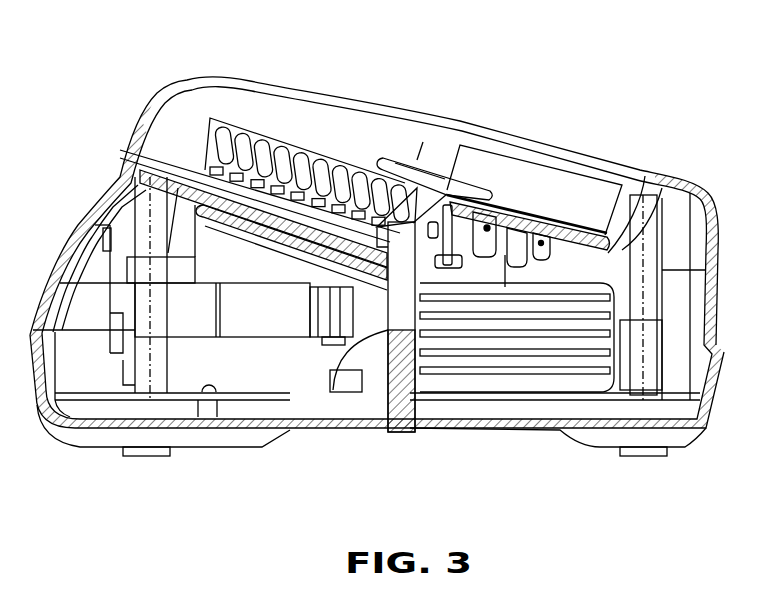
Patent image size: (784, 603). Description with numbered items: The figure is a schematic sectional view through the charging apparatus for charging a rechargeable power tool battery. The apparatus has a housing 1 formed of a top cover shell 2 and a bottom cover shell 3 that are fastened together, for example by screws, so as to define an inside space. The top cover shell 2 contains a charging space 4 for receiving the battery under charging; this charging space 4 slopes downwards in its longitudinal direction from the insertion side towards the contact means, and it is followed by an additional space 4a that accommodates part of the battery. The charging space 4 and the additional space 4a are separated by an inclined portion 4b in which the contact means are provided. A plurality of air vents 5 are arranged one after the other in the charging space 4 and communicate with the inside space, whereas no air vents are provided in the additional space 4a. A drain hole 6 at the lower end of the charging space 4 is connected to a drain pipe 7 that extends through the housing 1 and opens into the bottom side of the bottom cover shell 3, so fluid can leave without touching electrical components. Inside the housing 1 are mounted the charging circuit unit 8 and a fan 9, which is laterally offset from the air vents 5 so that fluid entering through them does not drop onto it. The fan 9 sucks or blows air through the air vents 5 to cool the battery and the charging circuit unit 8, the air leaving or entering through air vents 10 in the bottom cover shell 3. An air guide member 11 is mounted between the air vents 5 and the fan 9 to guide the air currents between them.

The housing 1 is at (534, 111).
The top cover shell 2 is at (670, 178).
The bottom cover shell 3 is at (703, 410).
The charging space 4 is at (183, 142).
The additional space 4a is at (494, 168).
The inclined portion 4b is at (411, 200).
The air vents 5 is at (328, 178).
The drain hole 6 is at (357, 168).
The drain pipe 7 is at (397, 390).
The charging circuit unit 8 is at (475, 271).
The fan 9 is at (195, 314).
The air vents 10 is at (530, 377).
The air guide member 11 is at (186, 249).